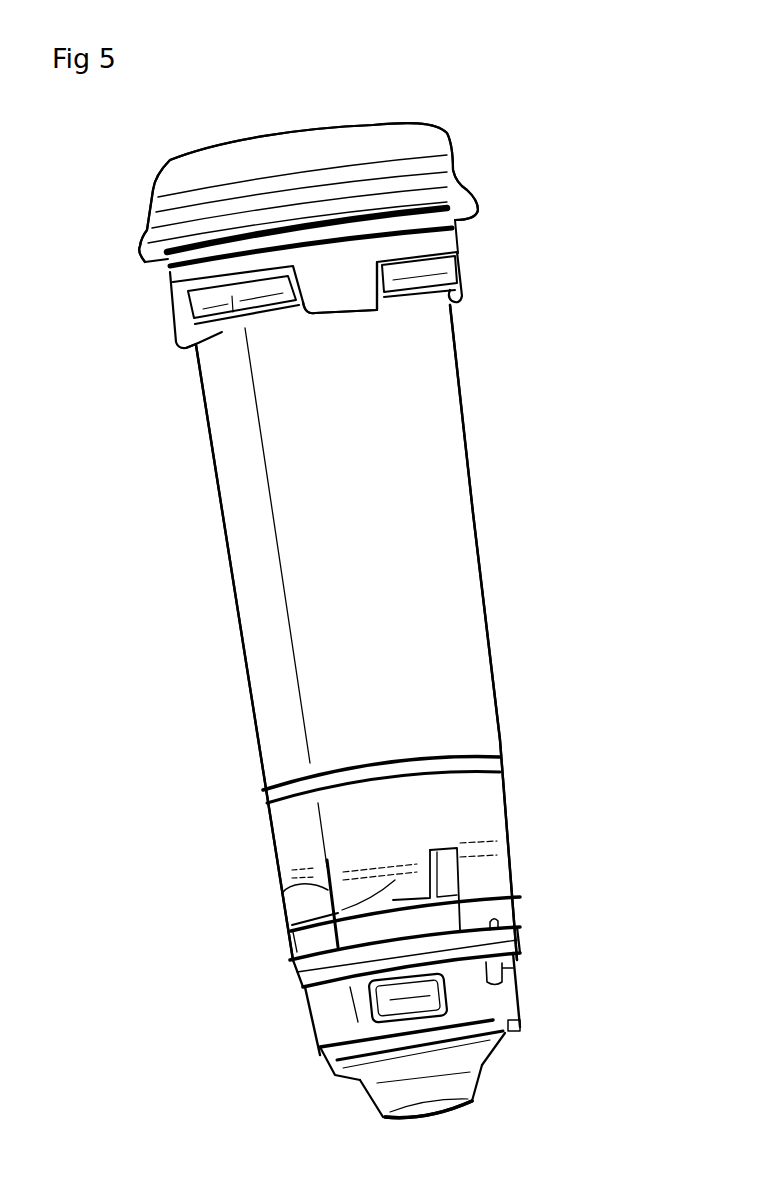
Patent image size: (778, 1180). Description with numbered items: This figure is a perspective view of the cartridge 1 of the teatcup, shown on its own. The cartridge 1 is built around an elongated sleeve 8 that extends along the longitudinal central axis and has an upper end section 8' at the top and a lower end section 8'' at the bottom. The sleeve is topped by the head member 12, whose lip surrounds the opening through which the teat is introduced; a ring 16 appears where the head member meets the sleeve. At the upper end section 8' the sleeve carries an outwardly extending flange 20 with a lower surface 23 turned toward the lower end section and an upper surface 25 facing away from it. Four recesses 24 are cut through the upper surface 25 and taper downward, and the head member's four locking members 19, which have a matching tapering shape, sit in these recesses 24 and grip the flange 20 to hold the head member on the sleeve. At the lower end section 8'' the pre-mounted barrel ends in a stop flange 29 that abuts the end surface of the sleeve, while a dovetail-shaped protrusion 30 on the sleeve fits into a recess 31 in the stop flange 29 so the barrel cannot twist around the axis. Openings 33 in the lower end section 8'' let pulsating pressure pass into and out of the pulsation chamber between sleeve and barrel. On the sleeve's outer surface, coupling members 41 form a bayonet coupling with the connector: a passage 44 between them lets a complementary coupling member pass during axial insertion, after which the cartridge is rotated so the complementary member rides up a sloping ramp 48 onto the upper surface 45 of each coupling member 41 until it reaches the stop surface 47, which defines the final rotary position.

The cartridge 1 is at (456, 115).
The elongated sleeve 8 is at (424, 632).
The upper end section 8' is at (159, 384).
The lower end section 8'' is at (485, 1004).
The head member 12 is at (453, 152).
The sealing ring 16 is at (443, 245).
The locking member 19 is at (465, 304).
The flange 20 is at (440, 273).
The lower surface 23 is at (420, 312).
The recess 24 is at (333, 313).
The upper surface 25 is at (197, 292).
The stop flange 29 is at (335, 1058).
The protrusion 30 is at (508, 1036).
The recess 31 is at (510, 1028).
The opening 33 is at (325, 1003).
The coupling member 41 is at (430, 917).
The passage 44 is at (490, 877).
The upper surface 45 is at (398, 900).
The stop surface 47 is at (400, 890).
The sloping ramp 48 is at (293, 887).